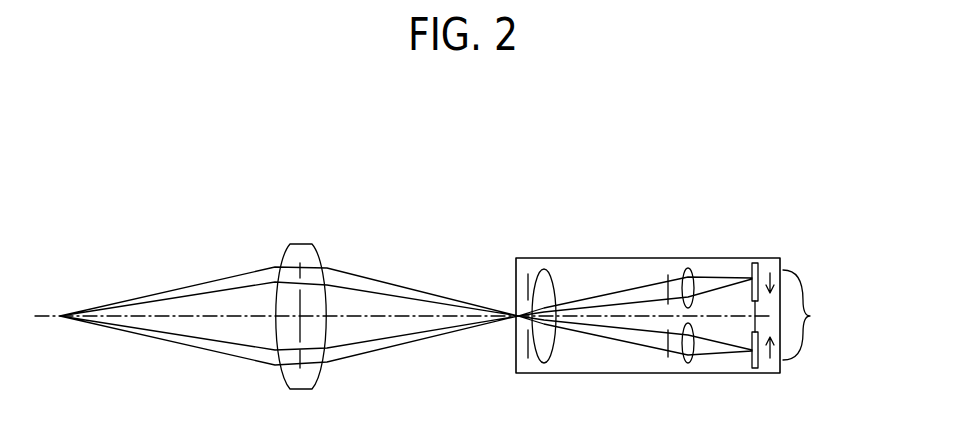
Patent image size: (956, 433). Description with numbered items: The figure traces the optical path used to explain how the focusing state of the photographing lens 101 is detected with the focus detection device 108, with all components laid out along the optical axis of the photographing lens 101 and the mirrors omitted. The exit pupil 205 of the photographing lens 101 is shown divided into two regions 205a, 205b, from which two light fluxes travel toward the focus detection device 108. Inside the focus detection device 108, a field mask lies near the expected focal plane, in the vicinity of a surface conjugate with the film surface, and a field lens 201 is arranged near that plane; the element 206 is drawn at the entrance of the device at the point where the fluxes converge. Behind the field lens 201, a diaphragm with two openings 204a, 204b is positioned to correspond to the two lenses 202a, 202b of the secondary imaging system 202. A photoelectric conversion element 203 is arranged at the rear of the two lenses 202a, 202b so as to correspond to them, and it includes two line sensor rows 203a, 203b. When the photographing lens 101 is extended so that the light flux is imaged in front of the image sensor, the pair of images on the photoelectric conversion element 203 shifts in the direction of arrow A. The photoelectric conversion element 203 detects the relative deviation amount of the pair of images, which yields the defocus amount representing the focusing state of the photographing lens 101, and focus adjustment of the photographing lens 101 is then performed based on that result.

The photographing lens 101 is at (298, 244).
The exit pupil 205 is at (302, 298).
The divided region 205a is at (303, 265).
The divided region 205b is at (304, 362).
The focus detection device 108 is at (518, 258).
The field mask / aperture 206 is at (527, 339).
The field lens 201 is at (545, 363).
The opening 204a is at (668, 277).
The opening 204b is at (667, 355).
The secondary imaging system 202 is at (699, 299).
The lens 202a is at (690, 272).
The lens 202b is at (688, 364).
The photoelectric conversion element 203 is at (717, 307).
The line sensor row 203a is at (760, 270).
The line sensor row 203b is at (759, 368).
The arrow A is at (807, 315).